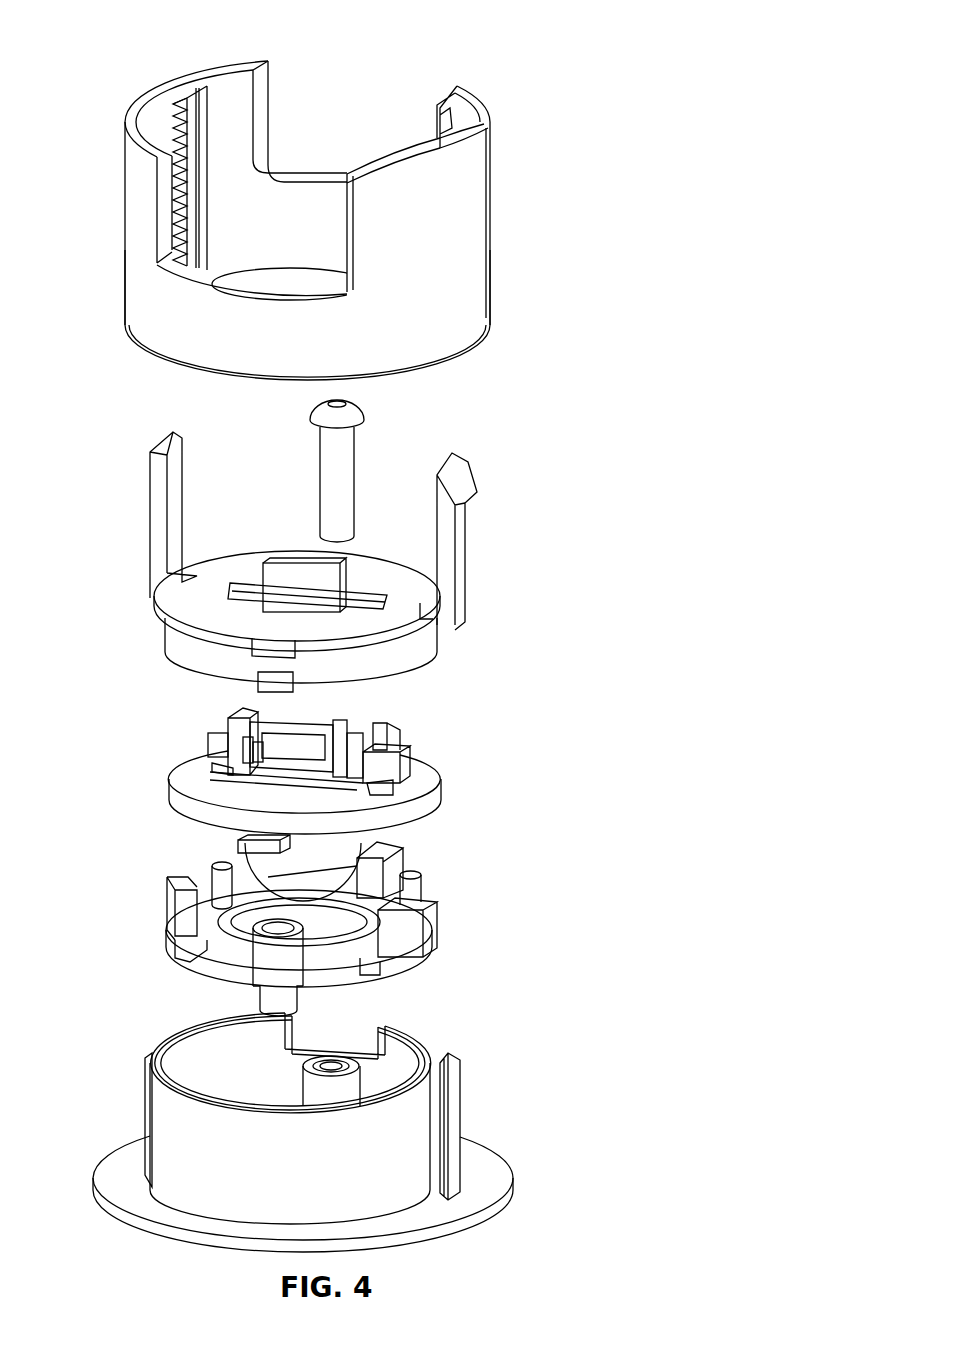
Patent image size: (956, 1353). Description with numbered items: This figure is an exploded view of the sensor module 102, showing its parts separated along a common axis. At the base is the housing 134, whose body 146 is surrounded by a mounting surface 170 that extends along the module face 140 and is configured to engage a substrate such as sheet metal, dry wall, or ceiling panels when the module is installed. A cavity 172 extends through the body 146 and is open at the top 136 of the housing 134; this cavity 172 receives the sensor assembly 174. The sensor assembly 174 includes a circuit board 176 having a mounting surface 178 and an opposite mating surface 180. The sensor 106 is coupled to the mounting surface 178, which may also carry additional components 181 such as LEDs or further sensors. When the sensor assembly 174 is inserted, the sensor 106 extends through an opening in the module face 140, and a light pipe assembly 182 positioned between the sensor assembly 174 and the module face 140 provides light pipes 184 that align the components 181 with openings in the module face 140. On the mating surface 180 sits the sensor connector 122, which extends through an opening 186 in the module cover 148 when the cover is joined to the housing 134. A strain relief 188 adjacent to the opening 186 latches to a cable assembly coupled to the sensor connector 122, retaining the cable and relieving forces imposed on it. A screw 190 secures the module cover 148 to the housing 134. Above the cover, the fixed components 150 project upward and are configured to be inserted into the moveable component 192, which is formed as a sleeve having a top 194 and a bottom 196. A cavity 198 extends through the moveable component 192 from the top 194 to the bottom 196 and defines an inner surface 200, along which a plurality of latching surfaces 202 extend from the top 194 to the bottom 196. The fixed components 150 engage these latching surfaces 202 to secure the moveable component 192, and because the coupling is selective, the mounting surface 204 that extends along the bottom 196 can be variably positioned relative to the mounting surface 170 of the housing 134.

The sensor module 102 is at (633, 92).
The sensor 106 is at (337, 860).
The sensor connector 122 is at (327, 738).
The housing 134 is at (460, 1117).
The top of the housing 136 is at (148, 1018).
The module face 140 is at (460, 1227).
The body of the housing 146 is at (177, 1117).
The module cover 148 is at (496, 453).
The fixed components 150 is at (467, 477).
The mounting surface of the housing 170 is at (485, 1180).
The cavity of the housing 172 is at (405, 1073).
The sensor assembly 174 is at (496, 722).
The circuit board 176 is at (407, 755).
The mounting surface of the circuit board 178 is at (186, 818).
The mating surface of the circuit board 180 is at (184, 772).
The additional components 181 is at (247, 842).
The light pipe assembly 182 is at (445, 892).
The light pipes 184 is at (283, 995).
The opening in the module cover 186 is at (355, 590).
The strain relief 188 is at (282, 578).
The screw 190 is at (340, 462).
The moveable component 192 is at (515, 324).
The top of the moveable component 194 is at (408, 33).
The bottom of the moveable component 196 is at (145, 370).
The cavity of the moveable component 198 is at (288, 230).
The inner surface 200 is at (240, 123).
The latching surfaces 202 is at (182, 108).
The mounting surface of the moveable component 204 is at (437, 362).